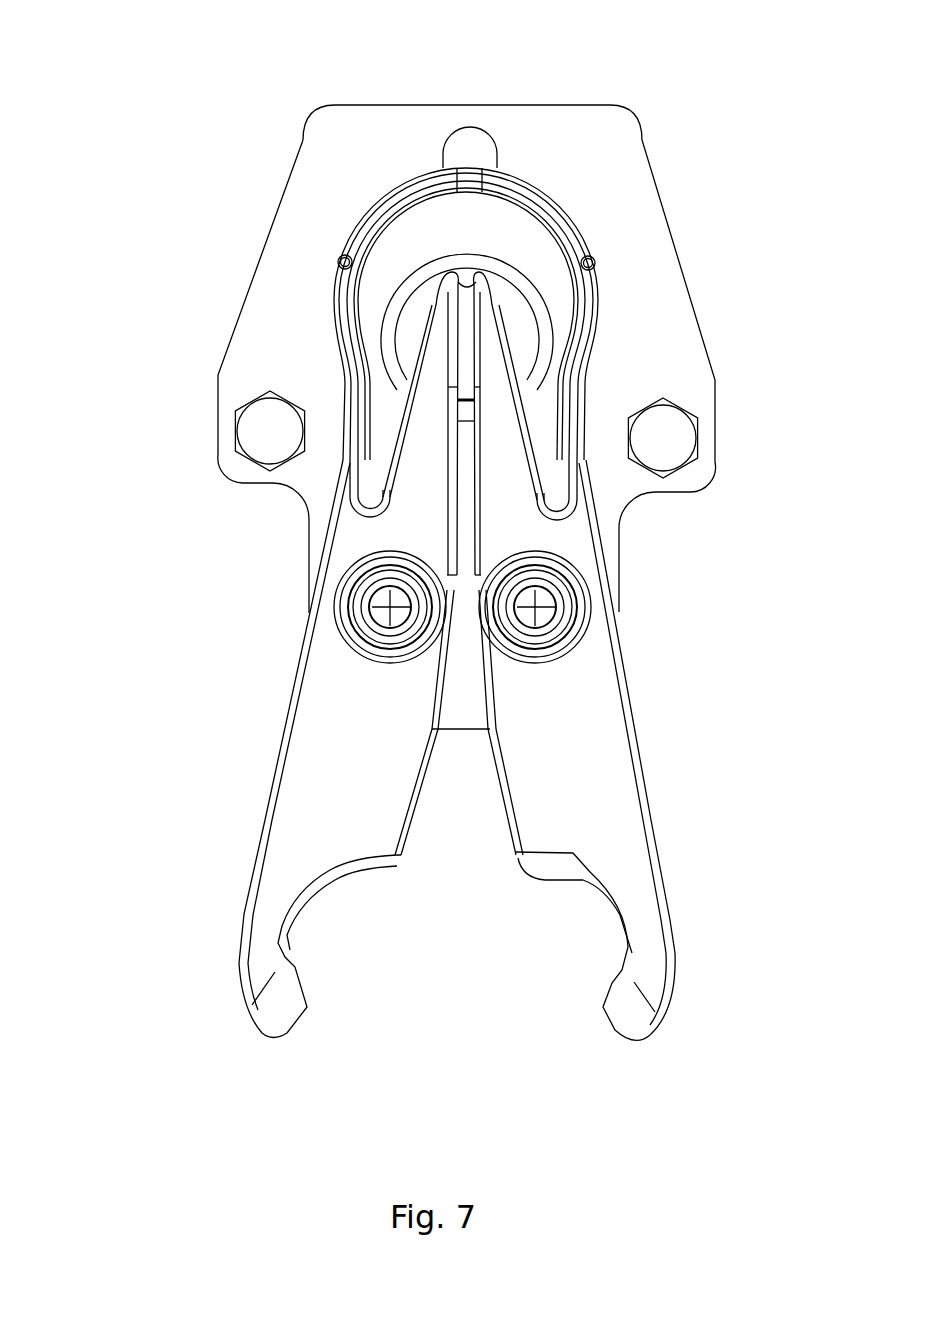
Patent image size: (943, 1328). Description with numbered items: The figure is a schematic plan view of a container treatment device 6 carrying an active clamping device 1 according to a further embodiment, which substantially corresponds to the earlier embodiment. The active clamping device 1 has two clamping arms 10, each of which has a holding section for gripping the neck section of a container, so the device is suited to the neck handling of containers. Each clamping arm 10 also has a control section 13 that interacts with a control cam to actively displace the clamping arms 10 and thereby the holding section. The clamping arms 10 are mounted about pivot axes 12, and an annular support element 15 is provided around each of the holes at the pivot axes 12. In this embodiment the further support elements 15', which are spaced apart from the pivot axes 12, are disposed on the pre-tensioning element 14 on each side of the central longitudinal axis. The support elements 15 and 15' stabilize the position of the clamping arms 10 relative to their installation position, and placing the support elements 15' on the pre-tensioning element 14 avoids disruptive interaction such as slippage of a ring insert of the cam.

The active clamping device 1 is at (172, 1003).
The container treatment device 6 is at (138, 81).
The clamping arm 10 is at (297, 768).
The pivot axis 12 is at (388, 605).
The control section 13 is at (430, 440).
The pre-tensioning element 14 is at (567, 223).
The annular support element 15 is at (458, 609).
The support element 15' is at (444, 219).